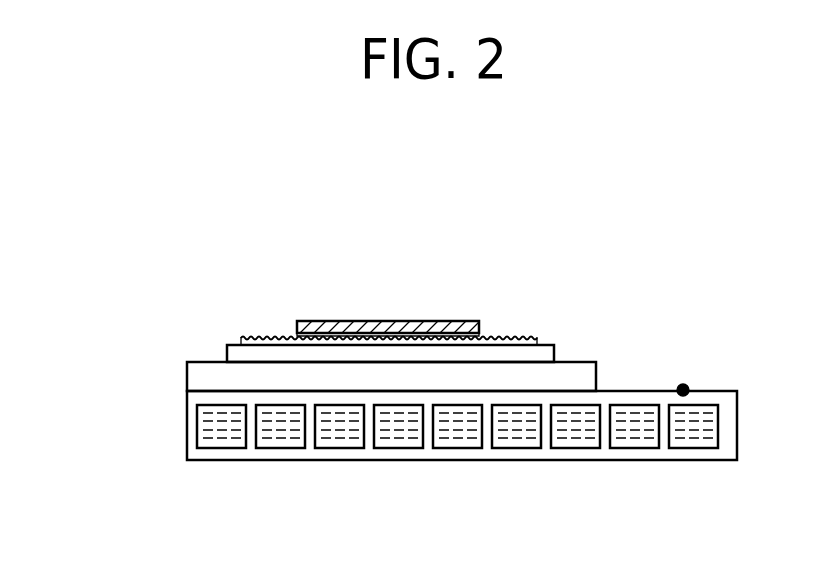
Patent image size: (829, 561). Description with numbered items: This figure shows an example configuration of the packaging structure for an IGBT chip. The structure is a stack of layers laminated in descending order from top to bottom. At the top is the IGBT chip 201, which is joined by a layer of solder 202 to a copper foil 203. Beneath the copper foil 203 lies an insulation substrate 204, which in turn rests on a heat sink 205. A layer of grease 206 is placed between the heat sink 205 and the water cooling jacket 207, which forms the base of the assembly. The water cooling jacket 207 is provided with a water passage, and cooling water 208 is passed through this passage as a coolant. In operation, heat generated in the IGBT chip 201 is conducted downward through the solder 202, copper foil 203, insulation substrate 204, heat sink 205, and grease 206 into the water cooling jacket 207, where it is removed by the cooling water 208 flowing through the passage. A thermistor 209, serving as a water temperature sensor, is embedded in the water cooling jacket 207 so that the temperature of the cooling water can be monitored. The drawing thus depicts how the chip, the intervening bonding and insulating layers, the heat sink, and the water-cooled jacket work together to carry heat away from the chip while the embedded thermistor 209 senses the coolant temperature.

The IGBT chip 201 is at (297, 323).
The solder 202 is at (297, 334).
The copper foil 203 is at (242, 338).
The insulation substrate 204 is at (227, 353).
The heat sink 205 is at (187, 381).
The grease 206 is at (187, 392).
The water cooling jacket 207 is at (199, 421).
The cooling water 208 is at (218, 447).
The thermistor 209 is at (687, 385).